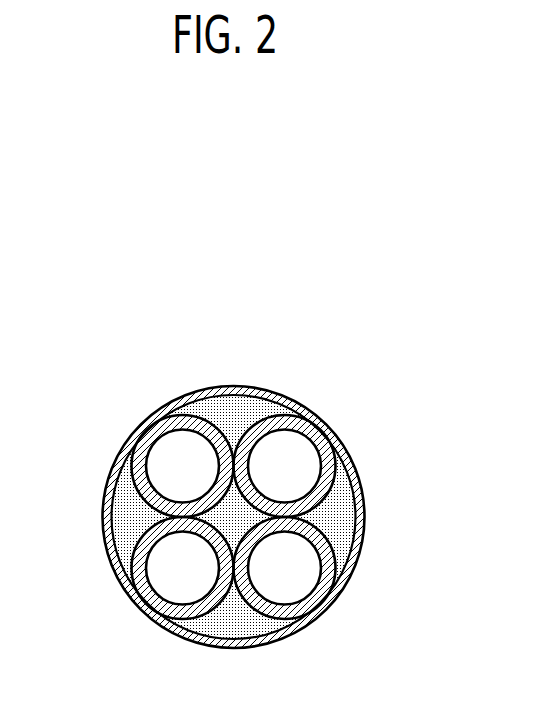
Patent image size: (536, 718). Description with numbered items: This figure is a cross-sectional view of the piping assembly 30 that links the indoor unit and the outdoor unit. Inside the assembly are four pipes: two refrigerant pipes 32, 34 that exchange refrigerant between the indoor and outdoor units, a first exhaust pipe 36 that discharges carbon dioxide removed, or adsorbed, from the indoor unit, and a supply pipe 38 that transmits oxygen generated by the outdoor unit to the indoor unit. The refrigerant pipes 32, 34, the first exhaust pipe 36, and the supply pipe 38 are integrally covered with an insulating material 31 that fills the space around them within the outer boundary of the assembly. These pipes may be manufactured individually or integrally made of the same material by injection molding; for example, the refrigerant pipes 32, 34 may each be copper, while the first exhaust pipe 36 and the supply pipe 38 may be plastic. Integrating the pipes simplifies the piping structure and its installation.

The piping assembly 30 is at (246, 498).
The insulating material 31 is at (340, 513).
The refrigerant pipe 32 is at (338, 441).
The refrigerant pipe 34 is at (140, 457).
The first exhaust pipe 36 is at (333, 580).
The supply pipe 38 is at (172, 608).